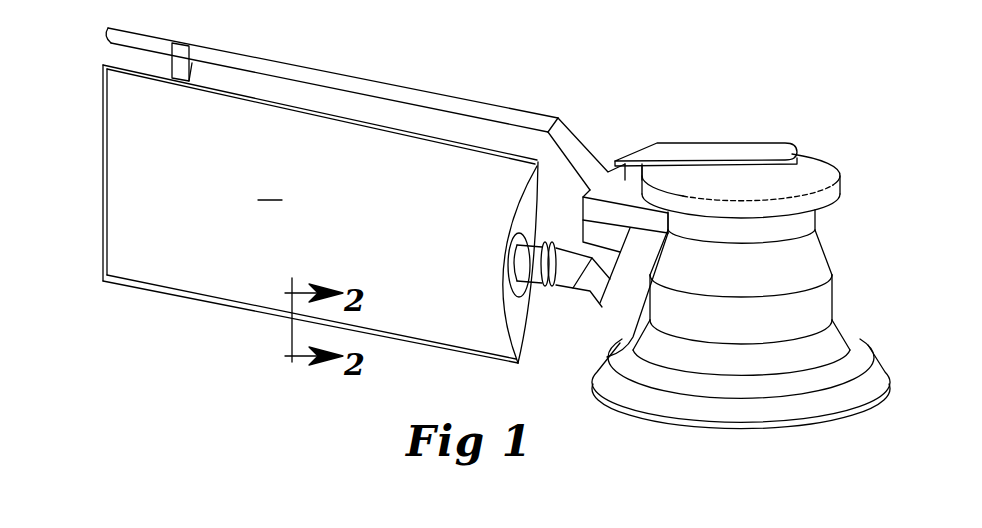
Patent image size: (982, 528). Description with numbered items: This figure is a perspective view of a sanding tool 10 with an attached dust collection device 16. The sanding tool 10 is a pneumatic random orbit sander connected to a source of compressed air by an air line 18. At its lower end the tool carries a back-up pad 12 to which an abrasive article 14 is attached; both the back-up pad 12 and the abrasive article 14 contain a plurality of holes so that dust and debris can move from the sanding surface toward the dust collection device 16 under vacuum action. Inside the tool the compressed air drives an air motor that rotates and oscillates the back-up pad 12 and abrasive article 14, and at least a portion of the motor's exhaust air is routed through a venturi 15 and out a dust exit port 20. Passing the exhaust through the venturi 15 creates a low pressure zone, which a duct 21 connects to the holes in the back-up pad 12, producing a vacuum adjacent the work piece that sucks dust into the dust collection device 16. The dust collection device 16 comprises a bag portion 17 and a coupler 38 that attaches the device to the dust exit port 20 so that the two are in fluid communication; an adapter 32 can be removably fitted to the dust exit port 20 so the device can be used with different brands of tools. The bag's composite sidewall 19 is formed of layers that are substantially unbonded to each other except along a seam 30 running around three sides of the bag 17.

The sanding tool 10 is at (808, 160).
The back-up pad 12 is at (642, 403).
The abrasive article 14 is at (717, 428).
The venturi 15 is at (590, 227).
The dust collection device 16 is at (102, 78).
The bag portion 17 is at (104, 227).
The air line 18 is at (247, 63).
The sidewall 19 is at (270, 189).
The dust exit port 20 is at (572, 286).
The duct 21 is at (600, 303).
The seam 30 is at (103, 136).
The adapter 32 is at (520, 265).
The coupler 38 is at (514, 232).